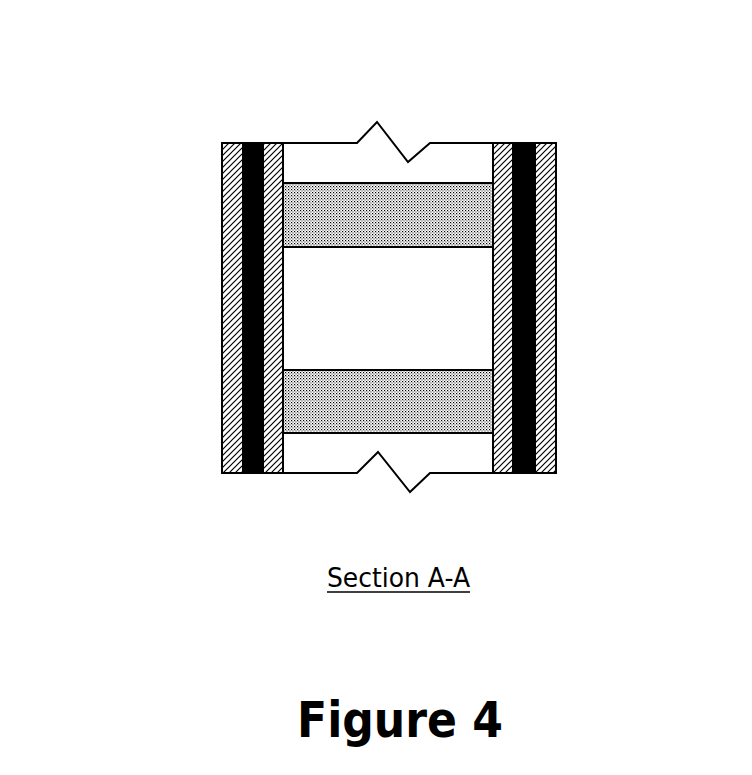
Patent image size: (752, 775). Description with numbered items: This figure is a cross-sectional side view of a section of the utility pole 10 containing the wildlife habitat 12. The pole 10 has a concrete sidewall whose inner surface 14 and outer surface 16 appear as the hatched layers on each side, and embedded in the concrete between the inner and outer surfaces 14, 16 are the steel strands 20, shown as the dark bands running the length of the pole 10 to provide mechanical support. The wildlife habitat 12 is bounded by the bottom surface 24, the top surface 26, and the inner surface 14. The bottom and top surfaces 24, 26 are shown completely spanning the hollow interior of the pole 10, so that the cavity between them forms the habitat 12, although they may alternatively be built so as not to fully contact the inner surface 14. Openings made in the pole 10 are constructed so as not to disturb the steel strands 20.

The pole 10 is at (134, 121).
The wildlife habitat 12 is at (322, 317).
The inner surface 14 is at (477, 155).
The outer surface 16 is at (556, 223).
The steel strands 20 is at (522, 145).
The bottom surface 24 is at (430, 433).
The top surface 26 is at (336, 183).